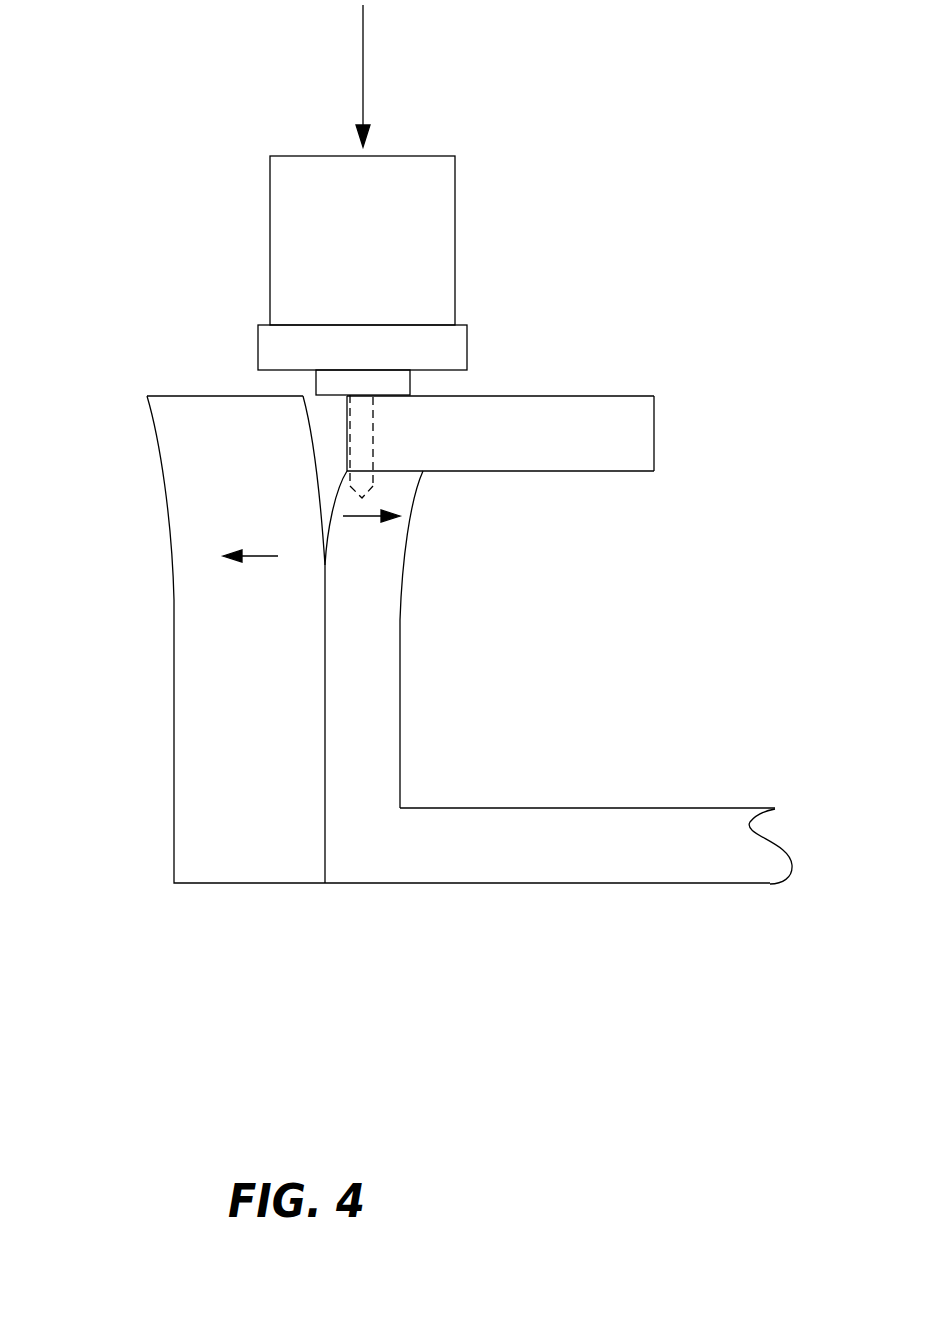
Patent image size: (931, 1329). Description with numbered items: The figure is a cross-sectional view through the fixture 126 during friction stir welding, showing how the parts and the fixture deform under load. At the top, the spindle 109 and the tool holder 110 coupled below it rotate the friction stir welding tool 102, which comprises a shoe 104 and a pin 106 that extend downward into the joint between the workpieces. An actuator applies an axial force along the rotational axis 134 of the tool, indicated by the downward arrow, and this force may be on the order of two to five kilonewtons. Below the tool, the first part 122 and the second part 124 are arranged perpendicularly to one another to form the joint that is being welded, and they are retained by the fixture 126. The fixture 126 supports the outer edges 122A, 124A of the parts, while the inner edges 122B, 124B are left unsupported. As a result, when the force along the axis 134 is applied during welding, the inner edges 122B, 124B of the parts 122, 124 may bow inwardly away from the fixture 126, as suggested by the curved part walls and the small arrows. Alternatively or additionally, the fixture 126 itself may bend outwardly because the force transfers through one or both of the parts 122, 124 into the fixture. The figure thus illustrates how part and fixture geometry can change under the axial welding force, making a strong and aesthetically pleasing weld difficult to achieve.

The friction stir welding tool 102 is at (452, 465).
The shoe 104 is at (423, 402).
The pin 106 is at (439, 441).
The spindle 109 is at (281, 233).
The tool holder 110 is at (287, 312).
The first part 122 is at (483, 639).
The outer edge of the first part 122A is at (269, 518).
The inner edge of the first part 122B is at (475, 639).
The second part 124 is at (504, 436).
The outer edge of the second part 124A is at (275, 436).
The inner edge of the second part 124B is at (729, 451).
The fixture 126 is at (427, 609).
The rotational axis of the friction stir welding tool 134 is at (425, 76).